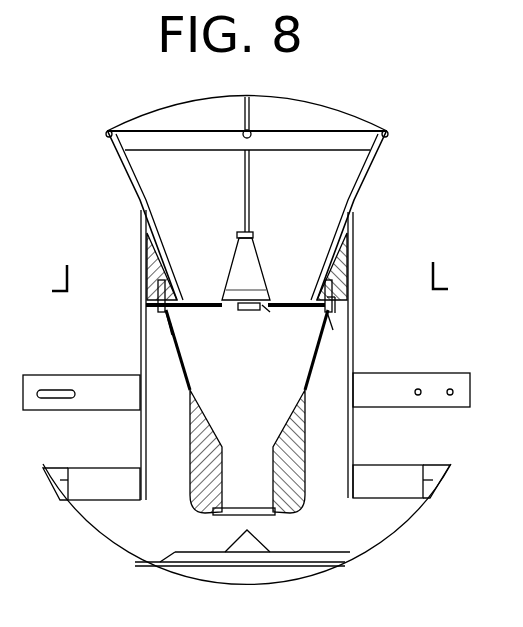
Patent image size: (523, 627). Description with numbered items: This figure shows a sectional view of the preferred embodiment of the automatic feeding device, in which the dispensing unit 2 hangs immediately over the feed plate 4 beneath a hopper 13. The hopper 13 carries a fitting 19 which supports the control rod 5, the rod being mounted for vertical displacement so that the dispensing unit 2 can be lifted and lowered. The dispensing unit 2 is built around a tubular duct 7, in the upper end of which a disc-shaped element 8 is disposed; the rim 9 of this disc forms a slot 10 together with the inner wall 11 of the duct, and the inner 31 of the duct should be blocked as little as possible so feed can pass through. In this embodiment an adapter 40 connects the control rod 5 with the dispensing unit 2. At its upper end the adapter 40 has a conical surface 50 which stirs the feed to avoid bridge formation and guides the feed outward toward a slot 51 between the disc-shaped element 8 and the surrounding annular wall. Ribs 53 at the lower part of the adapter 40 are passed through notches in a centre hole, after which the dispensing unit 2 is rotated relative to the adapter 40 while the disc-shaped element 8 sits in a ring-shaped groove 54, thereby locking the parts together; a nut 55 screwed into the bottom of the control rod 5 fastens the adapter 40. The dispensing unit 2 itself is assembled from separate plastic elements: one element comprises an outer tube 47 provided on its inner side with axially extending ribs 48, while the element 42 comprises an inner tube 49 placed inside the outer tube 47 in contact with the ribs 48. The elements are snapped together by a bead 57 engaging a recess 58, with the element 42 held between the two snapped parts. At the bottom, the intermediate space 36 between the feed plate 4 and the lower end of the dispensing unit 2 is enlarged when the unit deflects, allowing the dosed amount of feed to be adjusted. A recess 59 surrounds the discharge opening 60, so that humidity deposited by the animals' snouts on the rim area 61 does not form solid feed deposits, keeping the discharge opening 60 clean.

The dispensing unit 2 is at (176, 420).
The feed plate 4 is at (312, 560).
The control rod 5 is at (252, 110).
The tubular duct 7 is at (318, 382).
The disc-shaped element 8 is at (297, 300).
The rim 9 is at (176, 318).
The slot 10 is at (143, 276).
The inner wall 11 is at (174, 344).
The hopper 13 is at (363, 173).
The fitting 19 is at (307, 137).
The inner of the duct 31 is at (247, 366).
The intermediate space 36 is at (197, 538).
The adapter 40 is at (273, 240).
The second element 42 is at (143, 307).
The outer tube 47 is at (307, 422).
The ribs 48 is at (295, 465).
The inner tube 49 is at (225, 460).
The conical surface 50 is at (240, 253).
The slot 51 is at (324, 325).
The ribs 53 is at (246, 311).
The ring-shaped groove 54 is at (247, 300).
The nut 55 is at (268, 311).
The bead 57 is at (330, 325).
The recess 58 is at (331, 286).
The recess 59 is at (273, 512).
The discharge opening 60 is at (250, 510).
The rim area 61 is at (197, 522).